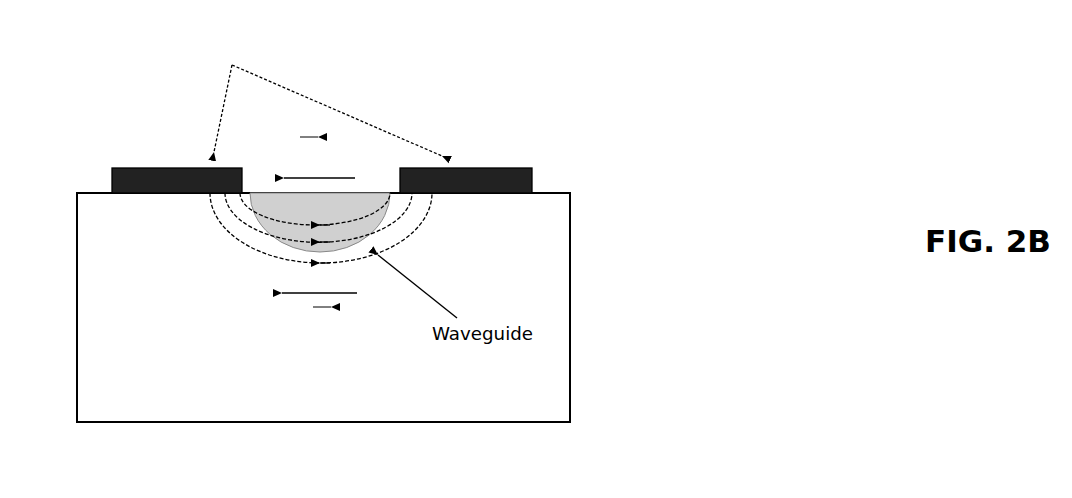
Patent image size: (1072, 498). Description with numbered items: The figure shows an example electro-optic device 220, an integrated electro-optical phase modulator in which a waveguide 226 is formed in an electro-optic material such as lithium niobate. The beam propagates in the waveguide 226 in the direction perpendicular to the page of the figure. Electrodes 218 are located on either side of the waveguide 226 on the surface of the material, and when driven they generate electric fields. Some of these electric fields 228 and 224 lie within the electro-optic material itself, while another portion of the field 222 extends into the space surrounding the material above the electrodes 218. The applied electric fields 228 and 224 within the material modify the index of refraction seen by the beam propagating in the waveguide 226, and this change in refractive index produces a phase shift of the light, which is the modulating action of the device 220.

The electrodes 218 is at (113, 167).
The electro-optic device 220 is at (570, 300).
The electric field in the space surrounding the material 222 is at (378, 170).
The applied electric field in the material 224 is at (303, 320).
The waveguide 226 is at (372, 202).
The applied electric field in the material 228 is at (404, 229).